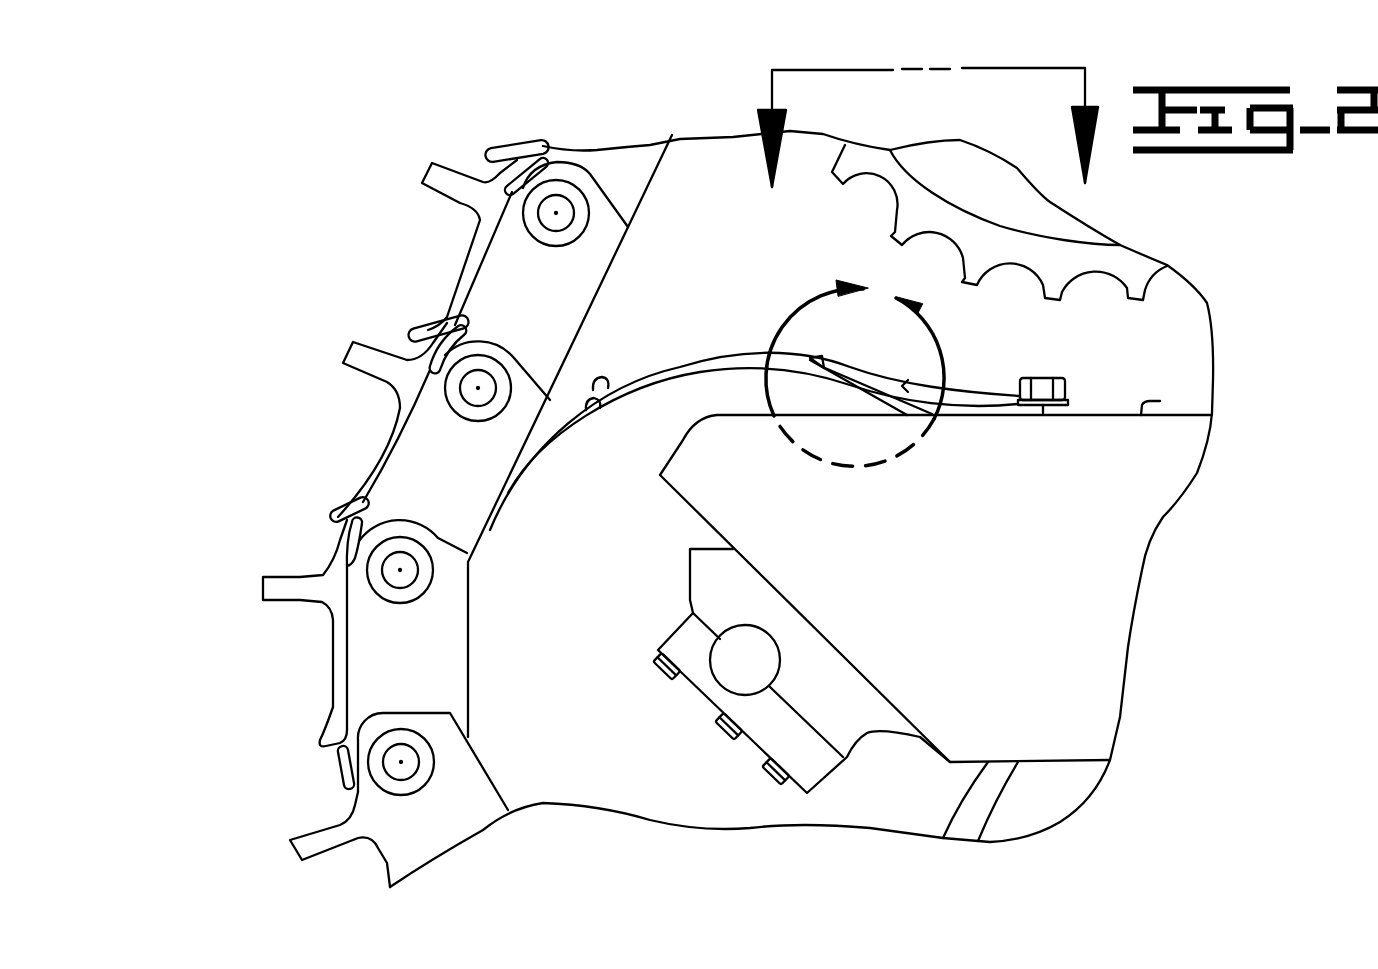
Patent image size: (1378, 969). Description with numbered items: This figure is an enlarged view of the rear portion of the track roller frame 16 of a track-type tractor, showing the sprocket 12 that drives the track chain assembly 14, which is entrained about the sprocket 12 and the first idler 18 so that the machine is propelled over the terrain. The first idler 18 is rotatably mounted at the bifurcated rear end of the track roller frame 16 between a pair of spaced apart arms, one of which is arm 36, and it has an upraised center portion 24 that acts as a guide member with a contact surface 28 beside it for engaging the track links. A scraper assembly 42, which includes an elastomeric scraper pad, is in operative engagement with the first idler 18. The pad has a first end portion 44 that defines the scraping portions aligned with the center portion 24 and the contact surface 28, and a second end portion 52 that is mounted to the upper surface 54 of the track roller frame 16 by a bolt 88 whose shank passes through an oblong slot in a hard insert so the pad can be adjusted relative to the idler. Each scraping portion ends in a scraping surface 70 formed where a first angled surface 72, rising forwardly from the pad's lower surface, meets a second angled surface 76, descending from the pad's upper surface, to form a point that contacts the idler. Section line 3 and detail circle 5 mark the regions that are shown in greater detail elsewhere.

The section line 3- 3 is at (928, 110).
The detail circle of FIG. 5 is at (855, 371).
The sprocket 12 is at (1117, 262).
The track chain assembly 14 is at (348, 350).
The track roller frame 16 is at (1049, 597).
The first idler 18 is at (577, 670).
The center portion 24 is at (612, 380).
The contact surface 28 is at (592, 404).
The arm 36 is at (1005, 676).
The scraper assembly 42 is at (1078, 393).
The first end portion 44 is at (845, 373).
The second end portion 52 is at (1043, 413).
The upper surface 54 is at (1160, 401).
The scraping surface 70 is at (810, 387).
The first angled surface 72 is at (845, 373).
The second angled surface 76 is at (810, 387).
The bolt 88 is at (1045, 378).